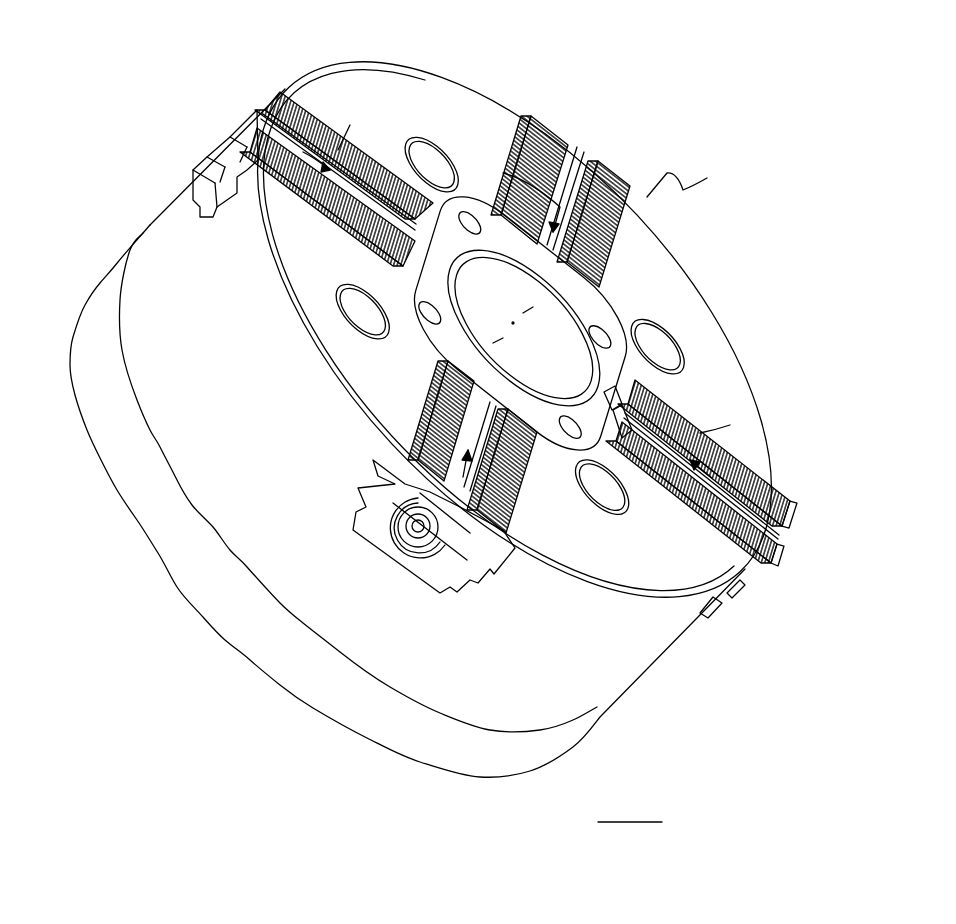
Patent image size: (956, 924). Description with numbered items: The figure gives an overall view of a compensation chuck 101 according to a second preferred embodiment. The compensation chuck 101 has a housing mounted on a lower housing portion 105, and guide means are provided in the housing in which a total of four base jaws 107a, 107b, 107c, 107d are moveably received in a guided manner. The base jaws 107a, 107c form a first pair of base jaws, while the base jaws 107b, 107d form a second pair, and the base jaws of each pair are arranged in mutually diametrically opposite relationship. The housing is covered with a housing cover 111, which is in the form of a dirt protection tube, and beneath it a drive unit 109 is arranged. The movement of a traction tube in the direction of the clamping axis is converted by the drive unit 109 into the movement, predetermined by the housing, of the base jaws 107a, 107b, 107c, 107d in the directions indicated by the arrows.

The compensation chuck 101 is at (108, 72).
The lower housing portion 105 is at (195, 585).
The base jaw 107a is at (398, 498).
The base jaw 107b is at (272, 125).
The base jaw 107c is at (583, 180).
The base jaw 107d is at (767, 523).
The drive unit 109 is at (547, 343).
The housing cover 111 is at (443, 242).